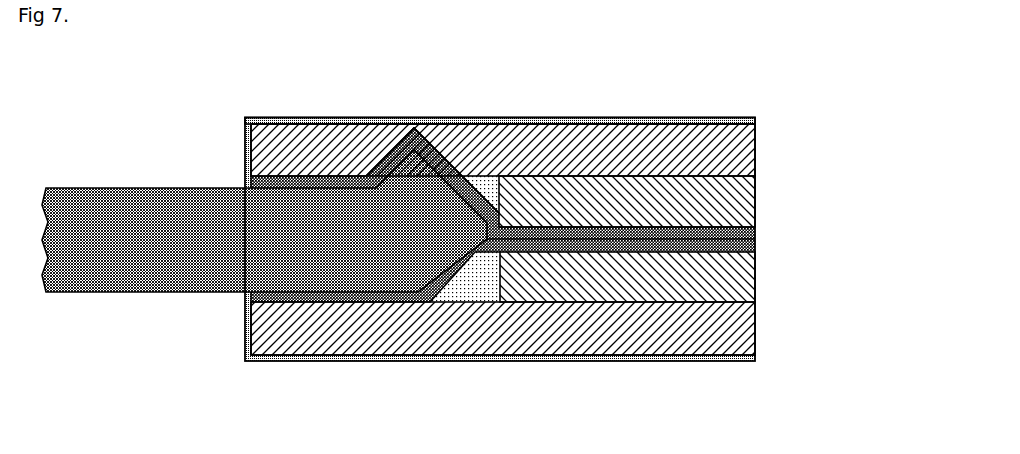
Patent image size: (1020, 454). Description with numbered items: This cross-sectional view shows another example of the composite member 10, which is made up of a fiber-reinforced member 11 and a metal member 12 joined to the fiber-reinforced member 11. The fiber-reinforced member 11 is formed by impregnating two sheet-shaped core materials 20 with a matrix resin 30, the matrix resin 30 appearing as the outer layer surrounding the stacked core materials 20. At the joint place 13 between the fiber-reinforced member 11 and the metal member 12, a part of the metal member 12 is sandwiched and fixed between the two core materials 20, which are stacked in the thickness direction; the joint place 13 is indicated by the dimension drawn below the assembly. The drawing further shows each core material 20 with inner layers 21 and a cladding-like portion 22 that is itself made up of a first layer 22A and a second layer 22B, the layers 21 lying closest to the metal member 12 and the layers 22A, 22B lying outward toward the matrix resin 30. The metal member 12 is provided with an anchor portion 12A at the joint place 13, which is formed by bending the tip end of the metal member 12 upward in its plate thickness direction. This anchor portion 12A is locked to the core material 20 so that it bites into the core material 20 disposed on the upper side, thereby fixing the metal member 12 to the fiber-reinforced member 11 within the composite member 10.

The composite member 10 is at (243, 117).
The fiber-reinforced member 11 is at (582, 116).
The metal member 12 is at (113, 186).
The anchor portion 12A is at (409, 160).
The joint place 13 is at (524, 430).
The core material 20 is at (589, 214).
The core layer 21 is at (566, 215).
The cladding 22 is at (563, 214).
The inner cladding layer 22A is at (742, 200).
The outer cladding layer 22B is at (745, 150).
The matrix resin 30 is at (672, 120).